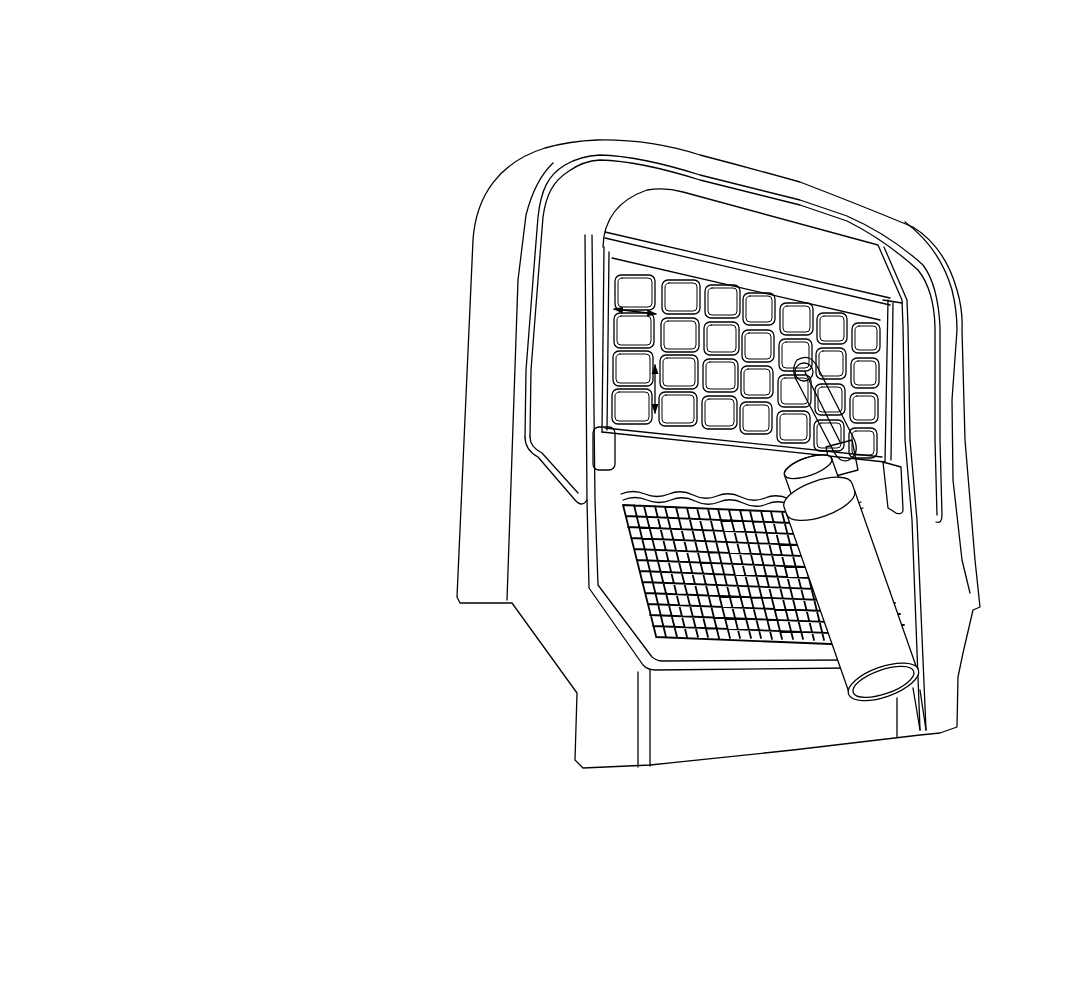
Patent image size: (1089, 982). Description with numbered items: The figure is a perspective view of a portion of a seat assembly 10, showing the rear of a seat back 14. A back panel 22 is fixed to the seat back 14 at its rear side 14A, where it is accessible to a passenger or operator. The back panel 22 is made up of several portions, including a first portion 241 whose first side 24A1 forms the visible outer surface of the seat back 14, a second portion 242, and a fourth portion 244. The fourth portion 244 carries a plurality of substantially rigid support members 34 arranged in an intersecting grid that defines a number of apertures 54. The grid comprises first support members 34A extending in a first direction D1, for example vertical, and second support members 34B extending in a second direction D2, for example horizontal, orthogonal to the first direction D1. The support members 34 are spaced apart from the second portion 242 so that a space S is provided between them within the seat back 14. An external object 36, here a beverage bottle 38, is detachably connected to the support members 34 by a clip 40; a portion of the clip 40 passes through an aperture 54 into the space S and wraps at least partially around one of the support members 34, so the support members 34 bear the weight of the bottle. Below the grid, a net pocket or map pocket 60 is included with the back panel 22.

The seat assembly 10 is at (447, 131).
The seat back 14 is at (492, 222).
The rear side 14A is at (760, 181).
The back panel 22 is at (898, 263).
The first portion 241 is at (803, 248).
The second portion 242 is at (838, 337).
The fourth portion 244 is at (660, 352).
The first side 24A1 is at (756, 298).
The support members 34 is at (607, 347).
The first support members 34A is at (727, 448).
The second support members 34B is at (890, 423).
The external object 36 is at (927, 577).
The beverage bottle 38 is at (863, 568).
The clip 40 is at (803, 393).
The apertures 54 is at (723, 281).
The net pocket and/or map pocket 60 is at (668, 656).
The space S is at (613, 277).
The first direction D1 is at (655, 390).
The second direction D2 is at (635, 311).